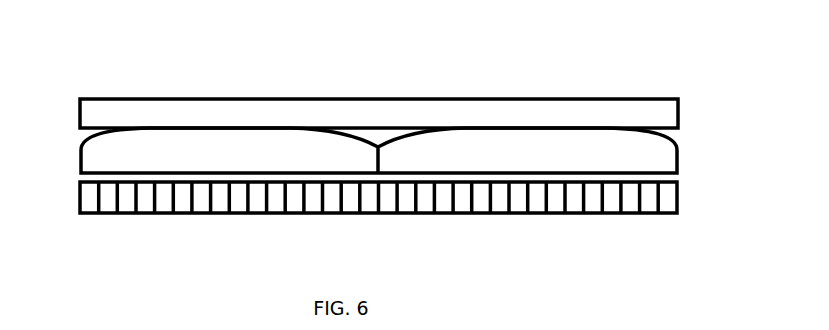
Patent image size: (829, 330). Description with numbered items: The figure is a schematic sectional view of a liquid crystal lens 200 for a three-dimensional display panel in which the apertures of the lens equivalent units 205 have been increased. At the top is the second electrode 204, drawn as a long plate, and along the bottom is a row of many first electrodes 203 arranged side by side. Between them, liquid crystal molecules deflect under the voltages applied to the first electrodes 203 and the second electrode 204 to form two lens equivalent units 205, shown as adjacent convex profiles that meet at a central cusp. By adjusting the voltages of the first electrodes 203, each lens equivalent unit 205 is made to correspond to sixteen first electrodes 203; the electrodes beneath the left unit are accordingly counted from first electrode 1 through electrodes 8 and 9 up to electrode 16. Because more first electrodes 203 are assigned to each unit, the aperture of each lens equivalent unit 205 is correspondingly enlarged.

The liquid crystal lens 200 is at (58, 78).
The second electrode 204 is at (78, 107).
The lens equivalent unit 205 is at (80, 163).
The first electrode 203 is at (81, 197).
The detector pixel 1 is at (92, 215).
The detector pixel 8 is at (222, 215).
The detector pixel 9 is at (242, 215).
The detector pixel 16 is at (371, 215).